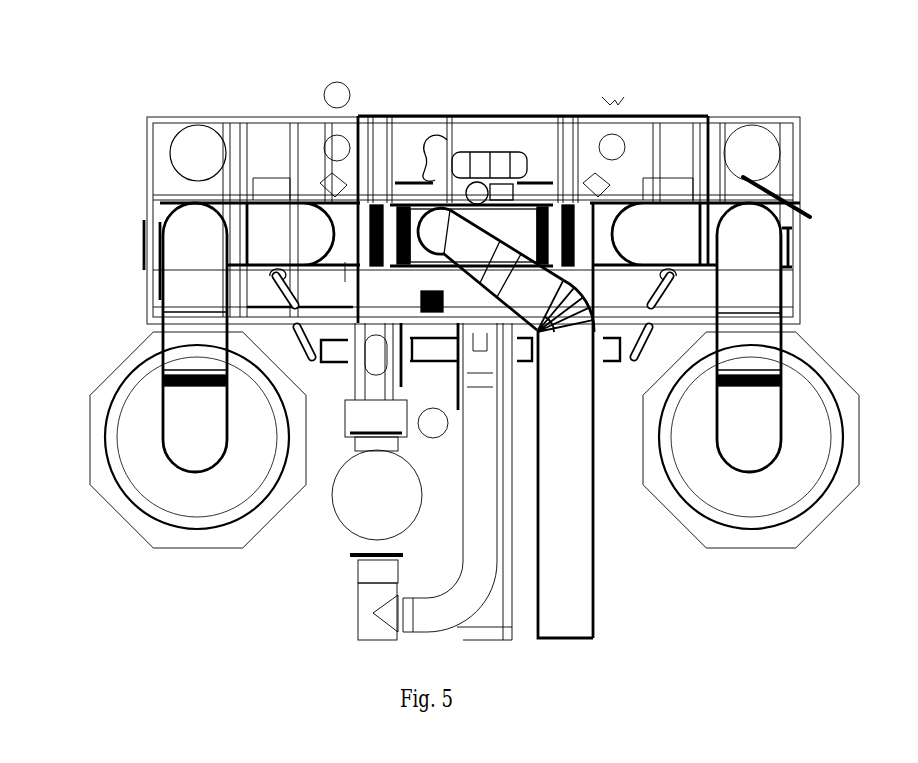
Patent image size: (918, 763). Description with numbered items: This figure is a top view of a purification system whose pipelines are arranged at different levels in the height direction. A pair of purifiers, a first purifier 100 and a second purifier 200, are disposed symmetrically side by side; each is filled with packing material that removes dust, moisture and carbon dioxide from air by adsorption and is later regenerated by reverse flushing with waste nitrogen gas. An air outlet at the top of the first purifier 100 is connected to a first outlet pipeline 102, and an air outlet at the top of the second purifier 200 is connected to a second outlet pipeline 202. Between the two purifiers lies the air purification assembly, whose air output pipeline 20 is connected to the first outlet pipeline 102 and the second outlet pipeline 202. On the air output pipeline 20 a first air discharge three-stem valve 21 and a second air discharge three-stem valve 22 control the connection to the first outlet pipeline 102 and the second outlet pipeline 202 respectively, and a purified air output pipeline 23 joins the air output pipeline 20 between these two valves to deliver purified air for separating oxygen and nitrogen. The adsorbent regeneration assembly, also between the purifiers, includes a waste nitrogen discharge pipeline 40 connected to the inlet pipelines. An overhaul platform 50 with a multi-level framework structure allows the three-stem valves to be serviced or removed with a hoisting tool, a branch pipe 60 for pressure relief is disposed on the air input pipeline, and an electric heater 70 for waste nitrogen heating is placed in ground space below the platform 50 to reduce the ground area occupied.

The air output pipeline 20 is at (493, 218).
The first air discharge three-stem valve 21 is at (413, 183).
The second air discharge three-stem valve 22 is at (545, 188).
The purified air output pipeline 23 is at (568, 495).
The waste nitrogen discharge pipeline 40 is at (188, 160).
The overhaul platform 50 is at (290, 119).
The branch pipe 60 is at (290, 365).
The electric heater 70 is at (452, 168).
The first purifier 100 is at (200, 500).
The first outlet pipeline 102 is at (195, 408).
The second purifier 200 is at (733, 508).
The second outlet pipeline 202 is at (763, 433).